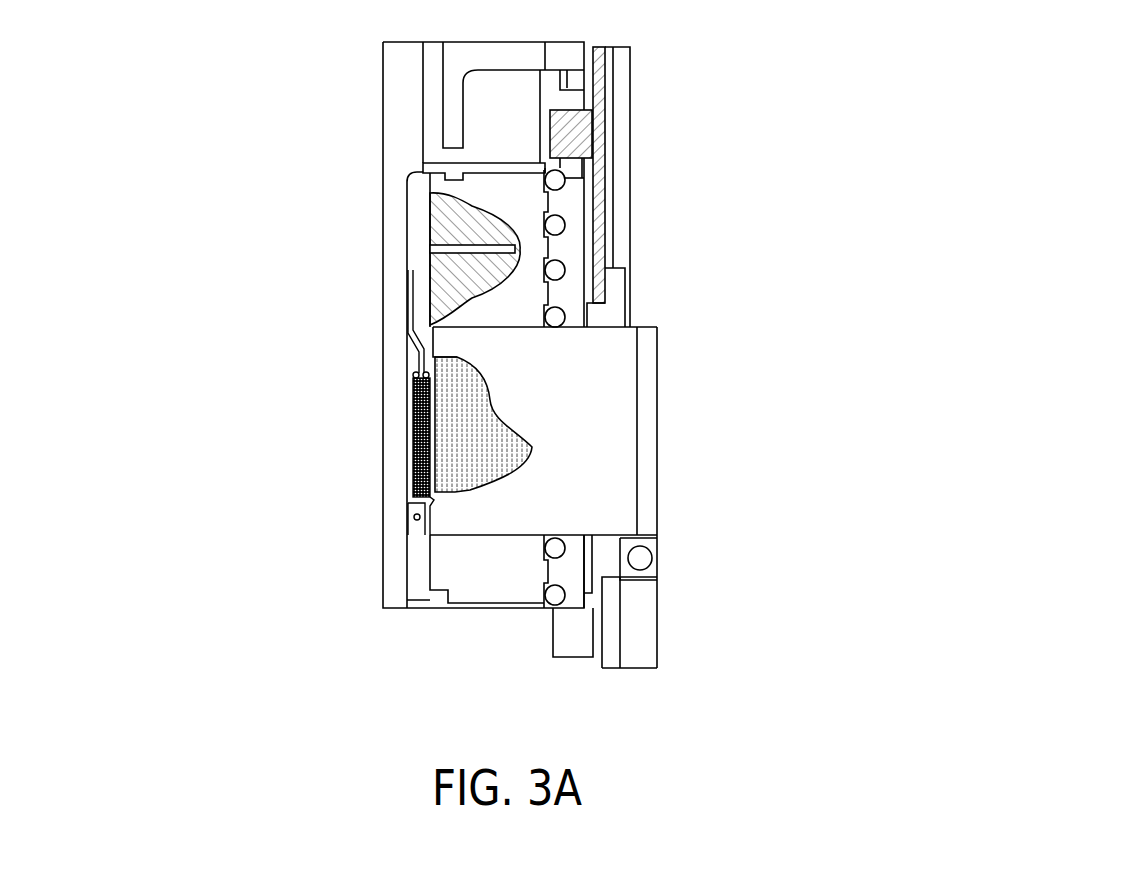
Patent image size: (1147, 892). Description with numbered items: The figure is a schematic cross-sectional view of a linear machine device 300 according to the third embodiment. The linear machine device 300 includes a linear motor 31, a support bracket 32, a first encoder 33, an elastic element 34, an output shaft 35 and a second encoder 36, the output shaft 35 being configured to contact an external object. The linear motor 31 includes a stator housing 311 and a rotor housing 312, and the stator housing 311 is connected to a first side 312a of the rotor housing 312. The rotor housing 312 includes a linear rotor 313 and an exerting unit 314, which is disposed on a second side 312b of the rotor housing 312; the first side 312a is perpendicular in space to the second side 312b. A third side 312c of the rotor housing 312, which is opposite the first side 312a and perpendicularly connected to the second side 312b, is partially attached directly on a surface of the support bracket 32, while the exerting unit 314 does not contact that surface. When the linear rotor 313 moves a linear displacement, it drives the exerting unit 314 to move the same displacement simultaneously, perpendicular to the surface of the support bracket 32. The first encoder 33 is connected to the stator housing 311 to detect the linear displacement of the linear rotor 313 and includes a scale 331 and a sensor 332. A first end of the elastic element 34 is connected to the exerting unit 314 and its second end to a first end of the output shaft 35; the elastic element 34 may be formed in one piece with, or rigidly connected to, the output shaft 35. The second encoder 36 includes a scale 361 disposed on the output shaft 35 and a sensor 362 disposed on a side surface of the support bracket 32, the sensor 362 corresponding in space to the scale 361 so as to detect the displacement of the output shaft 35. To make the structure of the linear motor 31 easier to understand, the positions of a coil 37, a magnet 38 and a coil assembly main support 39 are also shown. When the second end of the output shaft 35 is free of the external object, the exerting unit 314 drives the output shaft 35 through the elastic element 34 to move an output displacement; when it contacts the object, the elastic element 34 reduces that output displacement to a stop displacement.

The linear machine device 300 is at (1127, 96).
The linear motor 31 is at (343, 141).
The stator housing 311 is at (493, 106).
The rotor housing 312 is at (660, 386).
The first side 312a is at (597, 302).
The second side 312b is at (640, 442).
The third side 312c is at (536, 533).
The linear rotor 313 is at (612, 382).
The exerting unit 314 is at (658, 418).
The support bracket 32 is at (566, 567).
The first encoder 33 is at (675, 187).
The scale 331 is at (602, 97).
The sensor 332 is at (592, 150).
The elastic element 34 is at (651, 568).
The output shaft 35 is at (632, 618).
The second encoder 36 is at (529, 655).
The scale 361 is at (612, 660).
The sensor 362 is at (578, 628).
The coil 37 is at (448, 225).
The magnet 38 is at (453, 387).
The coil assembly main support 39 is at (397, 457).